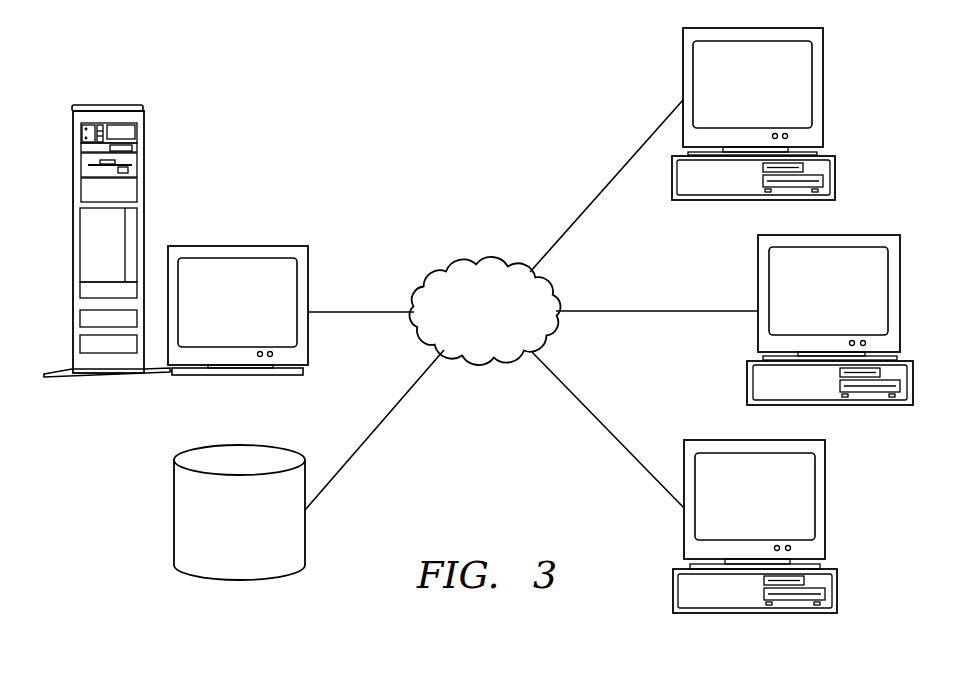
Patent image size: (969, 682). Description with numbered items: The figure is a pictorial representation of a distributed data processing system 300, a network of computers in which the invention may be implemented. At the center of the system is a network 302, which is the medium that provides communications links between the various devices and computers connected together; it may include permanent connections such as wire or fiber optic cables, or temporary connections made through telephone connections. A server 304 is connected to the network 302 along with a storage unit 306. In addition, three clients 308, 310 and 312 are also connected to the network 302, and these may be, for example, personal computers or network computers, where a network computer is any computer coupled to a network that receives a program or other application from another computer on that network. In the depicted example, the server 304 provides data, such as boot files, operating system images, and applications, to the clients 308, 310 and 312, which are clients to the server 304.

The distributed data processing system 300 is at (314, 95).
The network 302 is at (508, 324).
The server 304 is at (259, 316).
The storage unit 306 is at (261, 536).
The client 308 is at (774, 98).
The client 310 is at (830, 320).
The client 312 is at (755, 526).